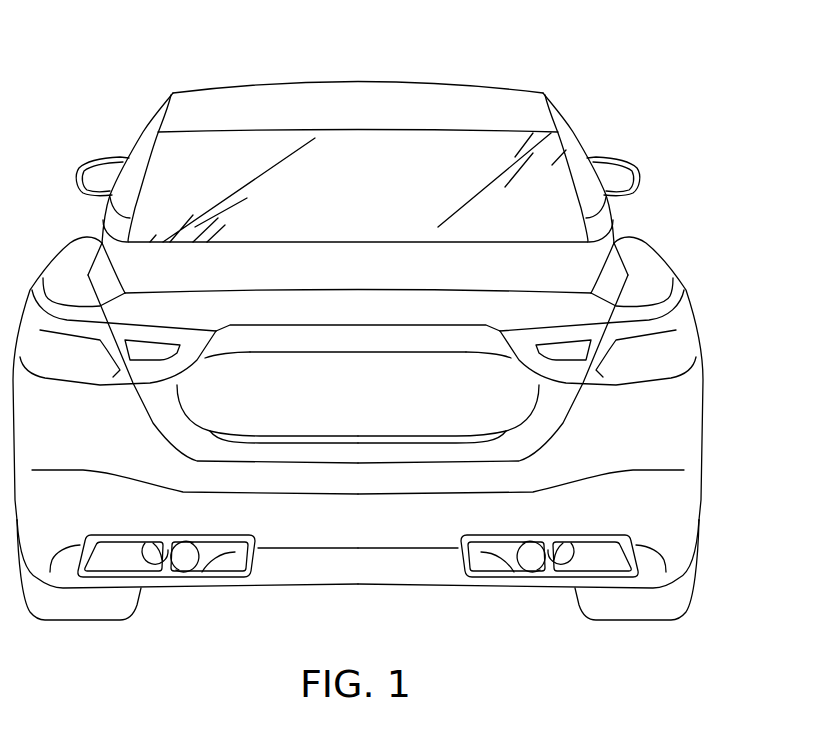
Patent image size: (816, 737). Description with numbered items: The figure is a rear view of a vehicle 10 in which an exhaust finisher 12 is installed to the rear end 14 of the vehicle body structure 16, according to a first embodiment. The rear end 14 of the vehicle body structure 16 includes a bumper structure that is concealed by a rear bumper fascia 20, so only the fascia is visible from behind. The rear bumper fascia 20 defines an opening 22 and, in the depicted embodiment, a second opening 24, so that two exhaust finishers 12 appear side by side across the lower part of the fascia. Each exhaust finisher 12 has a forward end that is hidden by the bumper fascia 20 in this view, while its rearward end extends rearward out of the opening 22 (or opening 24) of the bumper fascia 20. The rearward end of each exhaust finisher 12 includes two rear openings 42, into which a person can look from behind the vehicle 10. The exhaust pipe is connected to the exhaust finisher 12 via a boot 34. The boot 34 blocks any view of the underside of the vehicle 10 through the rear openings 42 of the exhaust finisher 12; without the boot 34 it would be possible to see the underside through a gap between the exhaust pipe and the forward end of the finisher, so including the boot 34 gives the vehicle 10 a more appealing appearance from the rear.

The vehicle 10 is at (160, 35).
The exhaust finisher 12 is at (227, 533).
The rear end 14 is at (650, 424).
The vehicle body structure 16 is at (565, 107).
The rear bumper fascia 20 is at (660, 510).
The opening 22 is at (93, 555).
The second opening 24 is at (623, 555).
The boot 34 is at (137, 555).
The rear openings 42 is at (235, 552).